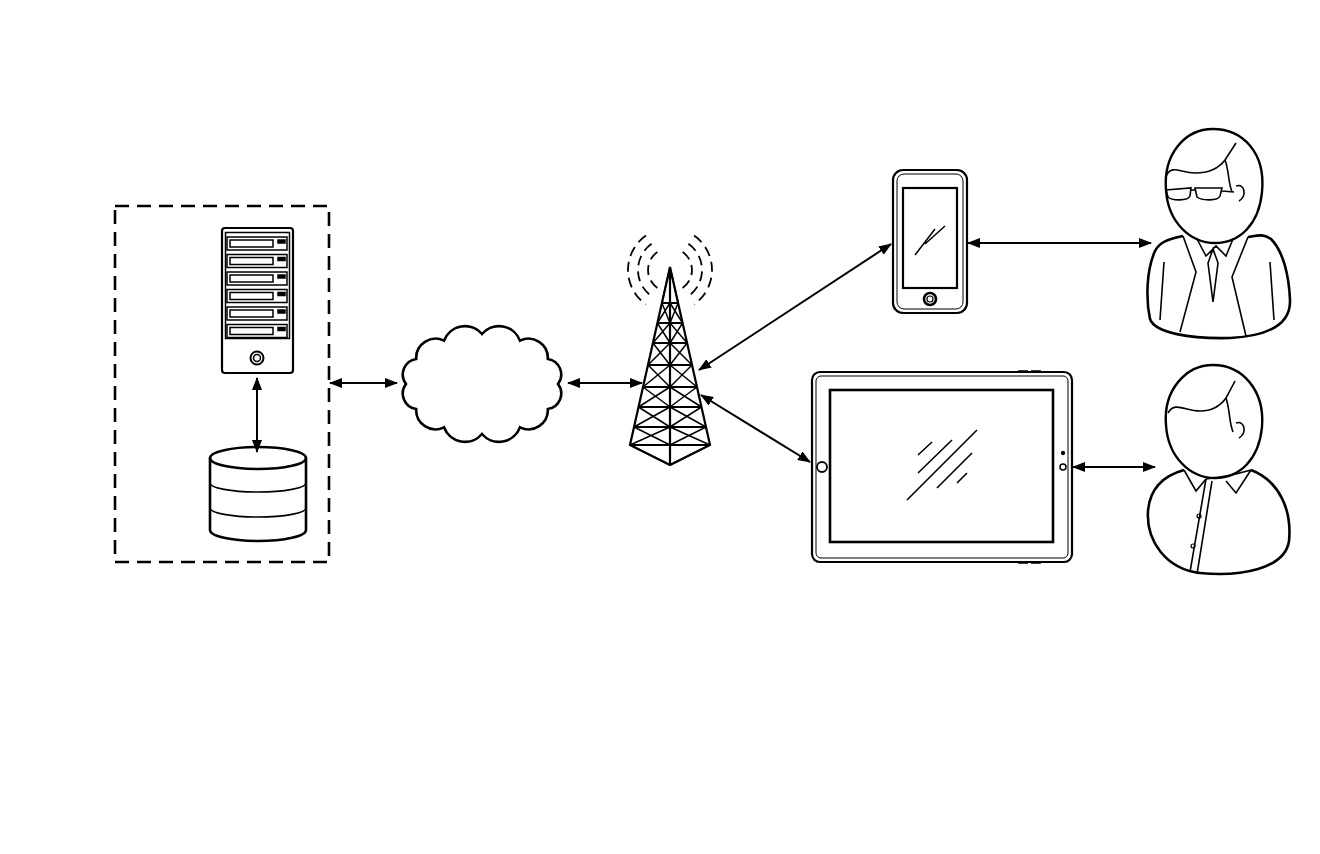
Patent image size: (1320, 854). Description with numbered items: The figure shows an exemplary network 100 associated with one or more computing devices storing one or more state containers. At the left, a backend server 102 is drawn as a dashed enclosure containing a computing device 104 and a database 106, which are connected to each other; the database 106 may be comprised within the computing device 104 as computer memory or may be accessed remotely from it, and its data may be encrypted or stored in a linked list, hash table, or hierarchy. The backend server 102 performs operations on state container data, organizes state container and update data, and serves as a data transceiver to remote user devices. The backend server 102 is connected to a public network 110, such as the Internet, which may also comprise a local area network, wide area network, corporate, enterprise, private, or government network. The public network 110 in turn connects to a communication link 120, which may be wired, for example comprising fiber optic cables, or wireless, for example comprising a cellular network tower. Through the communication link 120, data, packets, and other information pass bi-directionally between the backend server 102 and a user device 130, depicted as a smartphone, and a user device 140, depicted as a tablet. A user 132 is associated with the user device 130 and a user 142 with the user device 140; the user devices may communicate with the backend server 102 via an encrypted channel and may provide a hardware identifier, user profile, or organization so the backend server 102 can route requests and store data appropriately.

The network 100 is at (346, 85).
The backend server 102 is at (175, 198).
The computing device 104 is at (222, 300).
The database 106 is at (210, 490).
The public network 110 is at (481, 323).
The communication link 120 is at (654, 459).
The user device 130 is at (930, 170).
The user 132 is at (1211, 129).
The user device 140 is at (811, 500).
The user 142 is at (1237, 574).